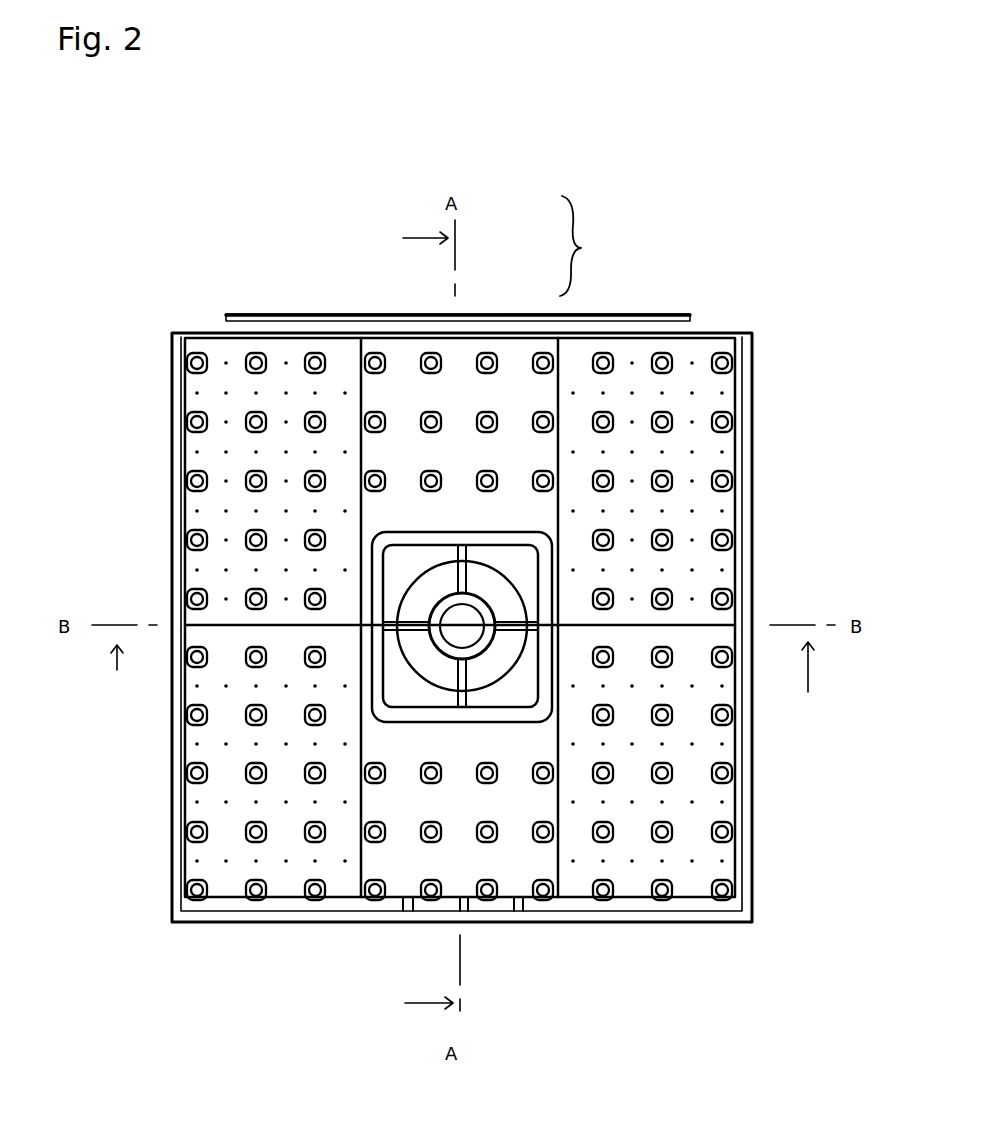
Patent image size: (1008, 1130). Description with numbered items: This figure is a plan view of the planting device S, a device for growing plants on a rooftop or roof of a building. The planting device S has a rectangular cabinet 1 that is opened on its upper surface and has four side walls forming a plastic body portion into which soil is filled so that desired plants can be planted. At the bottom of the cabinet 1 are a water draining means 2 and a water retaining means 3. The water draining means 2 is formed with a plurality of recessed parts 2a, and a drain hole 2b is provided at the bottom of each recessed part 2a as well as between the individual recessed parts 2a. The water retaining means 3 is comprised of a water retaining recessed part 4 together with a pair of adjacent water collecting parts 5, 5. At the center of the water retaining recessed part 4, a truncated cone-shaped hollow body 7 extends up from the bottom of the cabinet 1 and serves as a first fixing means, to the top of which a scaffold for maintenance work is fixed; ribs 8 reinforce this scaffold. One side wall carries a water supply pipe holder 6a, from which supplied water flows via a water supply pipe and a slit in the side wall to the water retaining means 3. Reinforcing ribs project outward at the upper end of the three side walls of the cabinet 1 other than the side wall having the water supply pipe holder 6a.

The planting device S is at (700, 216).
The cabinet 1 is at (486, 579).
The water draining means 2 is at (203, 507).
The recessed part 2a is at (185, 418).
The drain hole 2b is at (725, 363).
The water retaining means 3 is at (584, 246).
The water retaining recessed part 4 is at (498, 533).
The water collecting part 5 is at (490, 352).
The water supply pipe holder 6a is at (262, 314).
The truncated cone-shaped hollow body 7 is at (491, 663).
The rib 8 is at (466, 578).